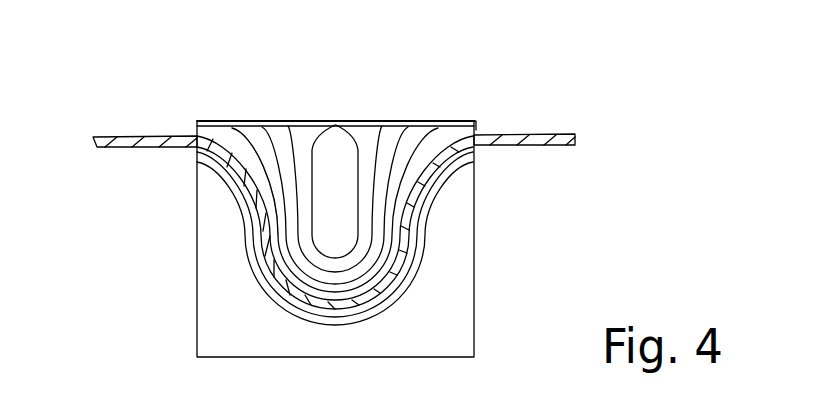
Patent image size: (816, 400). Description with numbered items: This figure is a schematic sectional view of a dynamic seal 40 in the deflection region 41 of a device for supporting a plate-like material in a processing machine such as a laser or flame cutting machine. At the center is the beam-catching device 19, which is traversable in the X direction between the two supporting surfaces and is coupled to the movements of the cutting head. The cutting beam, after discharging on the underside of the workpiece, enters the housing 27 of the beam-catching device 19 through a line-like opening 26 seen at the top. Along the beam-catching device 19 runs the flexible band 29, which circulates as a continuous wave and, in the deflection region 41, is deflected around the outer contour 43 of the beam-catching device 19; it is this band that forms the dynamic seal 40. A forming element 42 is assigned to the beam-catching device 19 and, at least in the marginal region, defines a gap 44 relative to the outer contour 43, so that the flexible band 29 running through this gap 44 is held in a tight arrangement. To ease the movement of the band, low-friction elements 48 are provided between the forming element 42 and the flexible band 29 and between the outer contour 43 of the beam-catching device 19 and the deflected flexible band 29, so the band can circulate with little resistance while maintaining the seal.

The beam-catching device 19 is at (400, 118).
The line-like opening 26 is at (334, 122).
The housing 27 is at (425, 142).
The flexible band 29 is at (545, 121).
The dynamic seal 40 is at (262, 302).
The deflection region 41 is at (448, 208).
The forming element 42 is at (450, 273).
The outer contour 43 is at (262, 186).
The gap 44 is at (268, 259).
The low-friction elements 48 is at (262, 155).